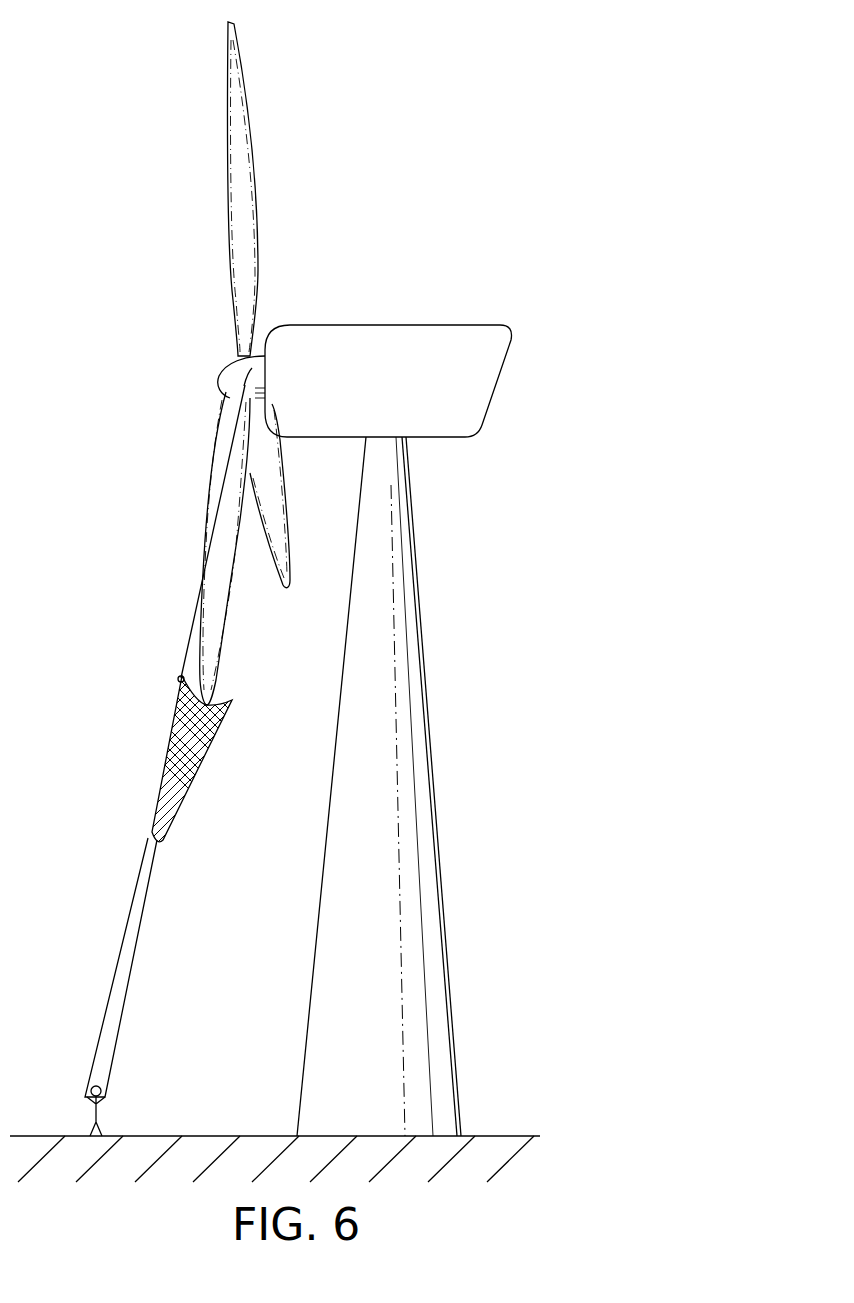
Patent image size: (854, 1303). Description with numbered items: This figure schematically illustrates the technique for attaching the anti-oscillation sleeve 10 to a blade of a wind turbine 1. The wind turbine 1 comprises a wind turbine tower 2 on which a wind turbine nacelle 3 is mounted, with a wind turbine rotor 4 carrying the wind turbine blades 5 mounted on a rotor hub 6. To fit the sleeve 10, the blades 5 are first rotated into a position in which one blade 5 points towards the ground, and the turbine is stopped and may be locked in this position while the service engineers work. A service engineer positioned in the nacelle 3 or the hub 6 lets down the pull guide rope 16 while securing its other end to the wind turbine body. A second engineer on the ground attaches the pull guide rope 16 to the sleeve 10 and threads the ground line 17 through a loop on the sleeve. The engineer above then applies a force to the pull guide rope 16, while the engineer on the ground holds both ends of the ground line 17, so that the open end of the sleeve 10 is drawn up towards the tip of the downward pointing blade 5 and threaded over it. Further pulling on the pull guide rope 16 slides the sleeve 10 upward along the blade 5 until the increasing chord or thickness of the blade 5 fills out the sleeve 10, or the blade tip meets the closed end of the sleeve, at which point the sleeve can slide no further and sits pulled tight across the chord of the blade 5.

The wind turbine 1 is at (546, 958).
The wind turbine tower 2 is at (436, 832).
The wind turbine nacelle 3 is at (462, 332).
The wind turbine rotor 4 is at (428, 122).
The wind turbine blade 5 is at (232, 171).
The rotor hub 6 is at (218, 376).
The anti-oscillation sleeve 10 is at (166, 755).
The pull guide rope 16 is at (192, 638).
The ground line 17 is at (121, 933).